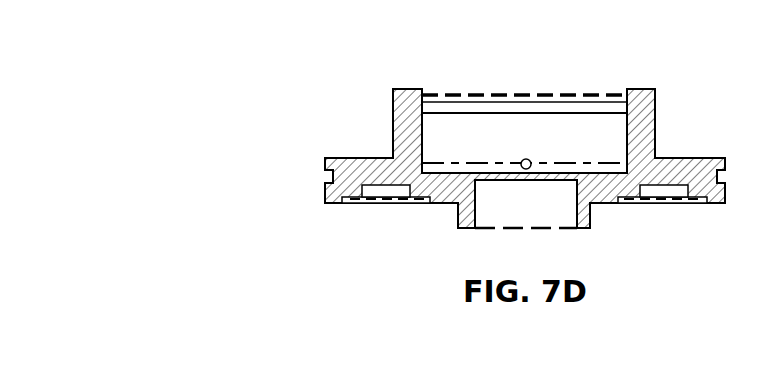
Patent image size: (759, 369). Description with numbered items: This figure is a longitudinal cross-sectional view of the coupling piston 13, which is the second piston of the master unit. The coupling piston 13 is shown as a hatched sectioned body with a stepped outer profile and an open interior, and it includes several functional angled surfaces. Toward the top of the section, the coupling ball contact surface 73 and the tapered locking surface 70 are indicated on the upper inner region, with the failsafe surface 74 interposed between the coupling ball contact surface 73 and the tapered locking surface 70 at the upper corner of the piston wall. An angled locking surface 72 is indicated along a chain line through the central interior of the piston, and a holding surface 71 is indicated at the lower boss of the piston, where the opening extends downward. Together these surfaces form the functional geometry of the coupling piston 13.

The coupling piston 13 is at (377, 46).
The failsafe surface 74 is at (418, 88).
The coupling ball contact surface 73 is at (436, 97).
The tapered locking surface 70 is at (446, 104).
The angled locking surface 72 is at (490, 160).
The holding surface 71 is at (490, 213).